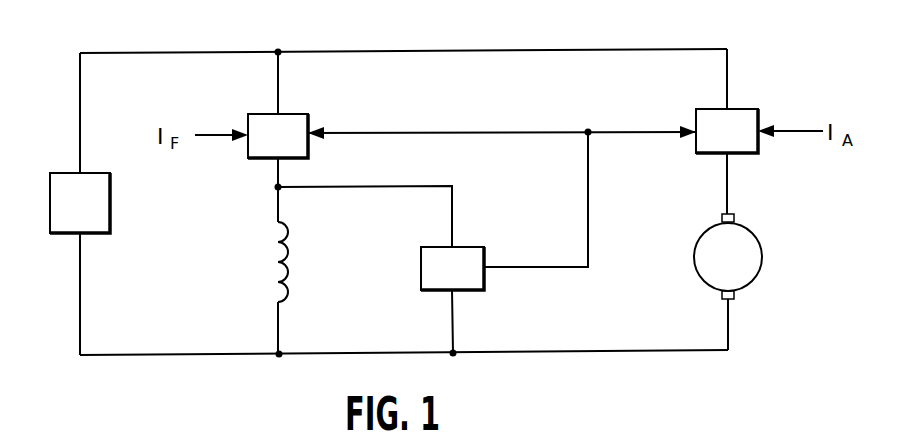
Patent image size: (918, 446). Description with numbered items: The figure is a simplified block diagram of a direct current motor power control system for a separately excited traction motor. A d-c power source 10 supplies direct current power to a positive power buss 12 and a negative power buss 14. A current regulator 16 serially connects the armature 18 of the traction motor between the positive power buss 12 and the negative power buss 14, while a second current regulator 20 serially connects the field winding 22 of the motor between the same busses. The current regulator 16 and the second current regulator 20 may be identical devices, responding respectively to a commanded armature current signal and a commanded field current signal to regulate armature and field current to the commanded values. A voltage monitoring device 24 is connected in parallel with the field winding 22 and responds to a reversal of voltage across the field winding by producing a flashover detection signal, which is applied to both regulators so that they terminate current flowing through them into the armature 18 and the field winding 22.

The d-c power source 10 is at (96, 216).
The positive power buss 12 is at (360, 52).
The negative power buss 14 is at (214, 357).
The current regulator 16 is at (758, 109).
The armature 18 is at (762, 251).
The second current regulator 20 is at (308, 114).
The field winding 22 is at (291, 257).
The voltage monitoring device 24 is at (485, 247).